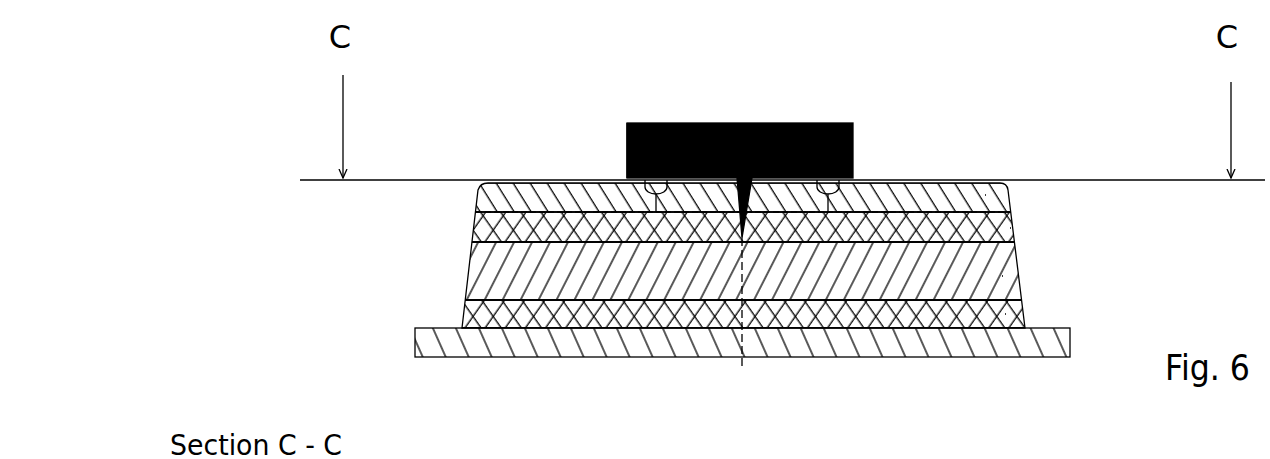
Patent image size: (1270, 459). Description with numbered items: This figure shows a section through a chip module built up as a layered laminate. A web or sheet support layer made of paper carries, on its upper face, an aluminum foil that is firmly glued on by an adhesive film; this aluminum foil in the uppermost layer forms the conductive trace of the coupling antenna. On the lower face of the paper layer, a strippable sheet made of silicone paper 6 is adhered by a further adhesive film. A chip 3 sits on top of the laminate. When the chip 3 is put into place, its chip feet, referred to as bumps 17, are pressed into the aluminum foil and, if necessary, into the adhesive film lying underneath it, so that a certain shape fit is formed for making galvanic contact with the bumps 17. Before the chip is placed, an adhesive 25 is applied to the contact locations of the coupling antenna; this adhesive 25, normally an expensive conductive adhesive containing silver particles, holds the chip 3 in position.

The chip 3 is at (826, 122).
The adhesive 25 is at (627, 155).
The bumps 17 is at (858, 173).
The silicone paper 6 is at (1043, 348).